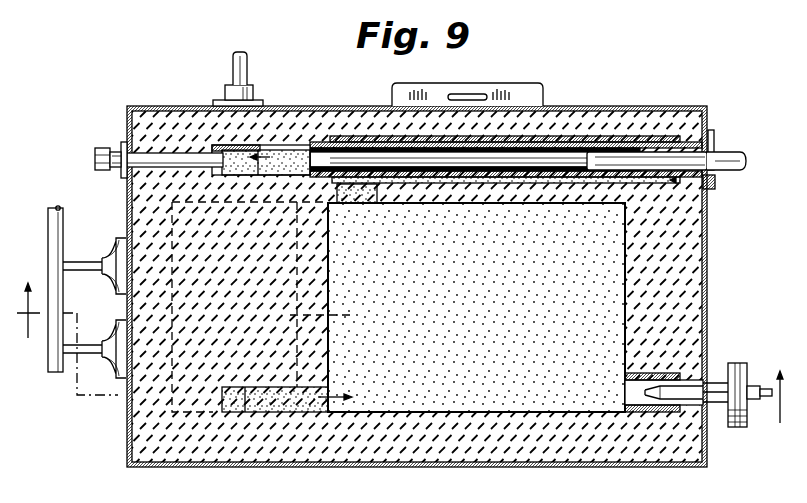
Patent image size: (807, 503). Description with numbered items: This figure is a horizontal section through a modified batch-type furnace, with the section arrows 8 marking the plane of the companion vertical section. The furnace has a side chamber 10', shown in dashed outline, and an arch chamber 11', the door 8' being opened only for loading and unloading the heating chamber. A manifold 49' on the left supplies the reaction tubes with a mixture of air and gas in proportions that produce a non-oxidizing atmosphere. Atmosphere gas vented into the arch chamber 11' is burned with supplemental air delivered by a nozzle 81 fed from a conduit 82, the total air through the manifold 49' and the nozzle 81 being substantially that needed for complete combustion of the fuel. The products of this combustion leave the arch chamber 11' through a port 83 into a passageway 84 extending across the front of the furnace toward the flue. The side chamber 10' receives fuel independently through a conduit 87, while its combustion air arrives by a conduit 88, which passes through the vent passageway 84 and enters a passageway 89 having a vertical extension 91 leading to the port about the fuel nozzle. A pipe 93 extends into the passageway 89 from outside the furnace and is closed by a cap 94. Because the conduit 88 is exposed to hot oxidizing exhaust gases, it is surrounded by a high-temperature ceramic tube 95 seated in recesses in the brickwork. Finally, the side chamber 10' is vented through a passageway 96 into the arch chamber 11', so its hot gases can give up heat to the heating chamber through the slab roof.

The section line 8- 8 is at (399, 367).
The door 8' is at (474, 79).
The side chamber 10' is at (417, 286).
The arch chamber 11' is at (476, 307).
The manifold 49' is at (69, 278).
The nozzle 81 is at (688, 383).
The conduit 82 is at (765, 386).
The port 83 is at (362, 203).
The passageway 84 is at (604, 144).
The conduit 87 is at (248, 65).
The conduit 88 is at (727, 157).
The passageway 89 is at (297, 153).
The vertical extension 91 is at (233, 157).
The pipe 93 is at (152, 157).
The cap 94 is at (95, 155).
The ceramic tube 95 is at (648, 150).
The passageway 96 is at (282, 404).